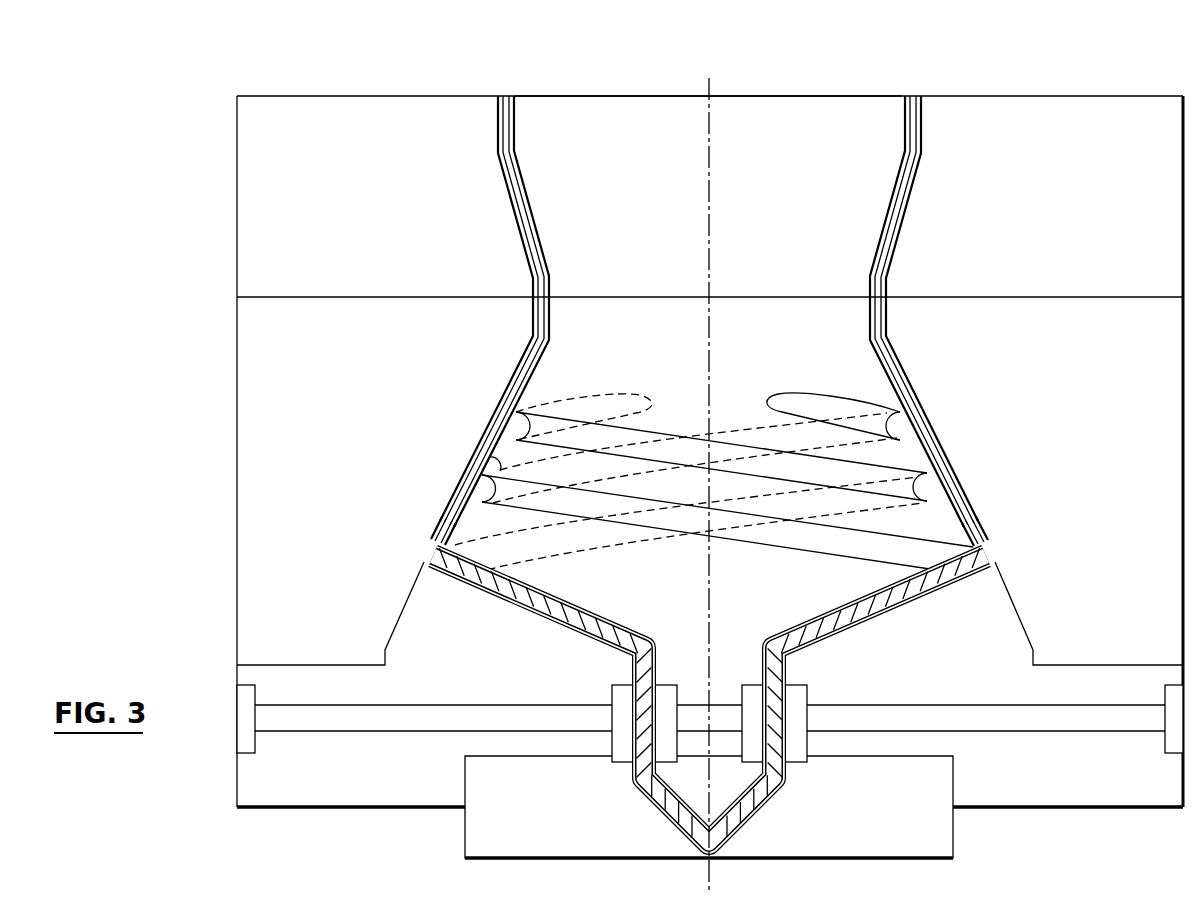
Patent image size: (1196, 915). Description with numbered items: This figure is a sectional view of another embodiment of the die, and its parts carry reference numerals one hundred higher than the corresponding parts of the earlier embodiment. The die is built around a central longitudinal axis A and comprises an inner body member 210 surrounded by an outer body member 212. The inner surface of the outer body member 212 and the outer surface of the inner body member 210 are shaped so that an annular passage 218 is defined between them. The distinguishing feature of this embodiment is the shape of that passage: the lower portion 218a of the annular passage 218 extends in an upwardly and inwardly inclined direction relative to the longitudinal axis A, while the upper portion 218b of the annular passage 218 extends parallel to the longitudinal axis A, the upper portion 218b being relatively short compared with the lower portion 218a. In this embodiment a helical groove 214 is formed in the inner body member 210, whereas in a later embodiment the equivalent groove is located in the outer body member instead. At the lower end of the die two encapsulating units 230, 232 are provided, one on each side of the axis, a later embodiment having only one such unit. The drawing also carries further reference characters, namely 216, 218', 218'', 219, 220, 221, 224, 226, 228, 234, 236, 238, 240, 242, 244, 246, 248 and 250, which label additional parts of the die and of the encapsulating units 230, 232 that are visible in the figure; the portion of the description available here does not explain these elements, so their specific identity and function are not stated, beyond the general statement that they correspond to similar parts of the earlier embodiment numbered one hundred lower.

The inner body member 210 is at (708, 285).
The outer body member 212 is at (364, 316).
The helical groove 214 is at (657, 492).
The helical coil turn 216 is at (810, 545).
The annular passage 218 is at (444, 320).
The lower portion of the annular passage 218a is at (458, 503).
The upper portion of the annular passage 218b is at (533, 316).
The conical wall upper section 218' is at (948, 311).
The conical wall lower section 218'' is at (1019, 521).
The inlet opening 219 is at (628, 96).
The cylindrical wall portion 220 is at (917, 96).
The outer housing 221 is at (400, 133).
The outlet 224 is at (683, 854).
The left outlet duct wall 226 is at (652, 800).
The right outlet duct wall 228 is at (770, 804).
The encapsulating unit 230 is at (620, 704).
The encapsulating unit 232 is at (800, 700).
The left duct wall section 234 is at (634, 770).
The right duct wall section 236 is at (784, 766).
The left support rail 238 is at (347, 705).
The right support rail 240 is at (990, 712).
The left inner clamp block 242 is at (672, 684).
The right inner clamp block 244 is at (757, 684).
The left insulated duct wall 246 is at (522, 612).
The right insulated duct wall 248 is at (896, 614).
The coil tube 250 is at (497, 462).
The longitudinal axis A is at (712, 162).